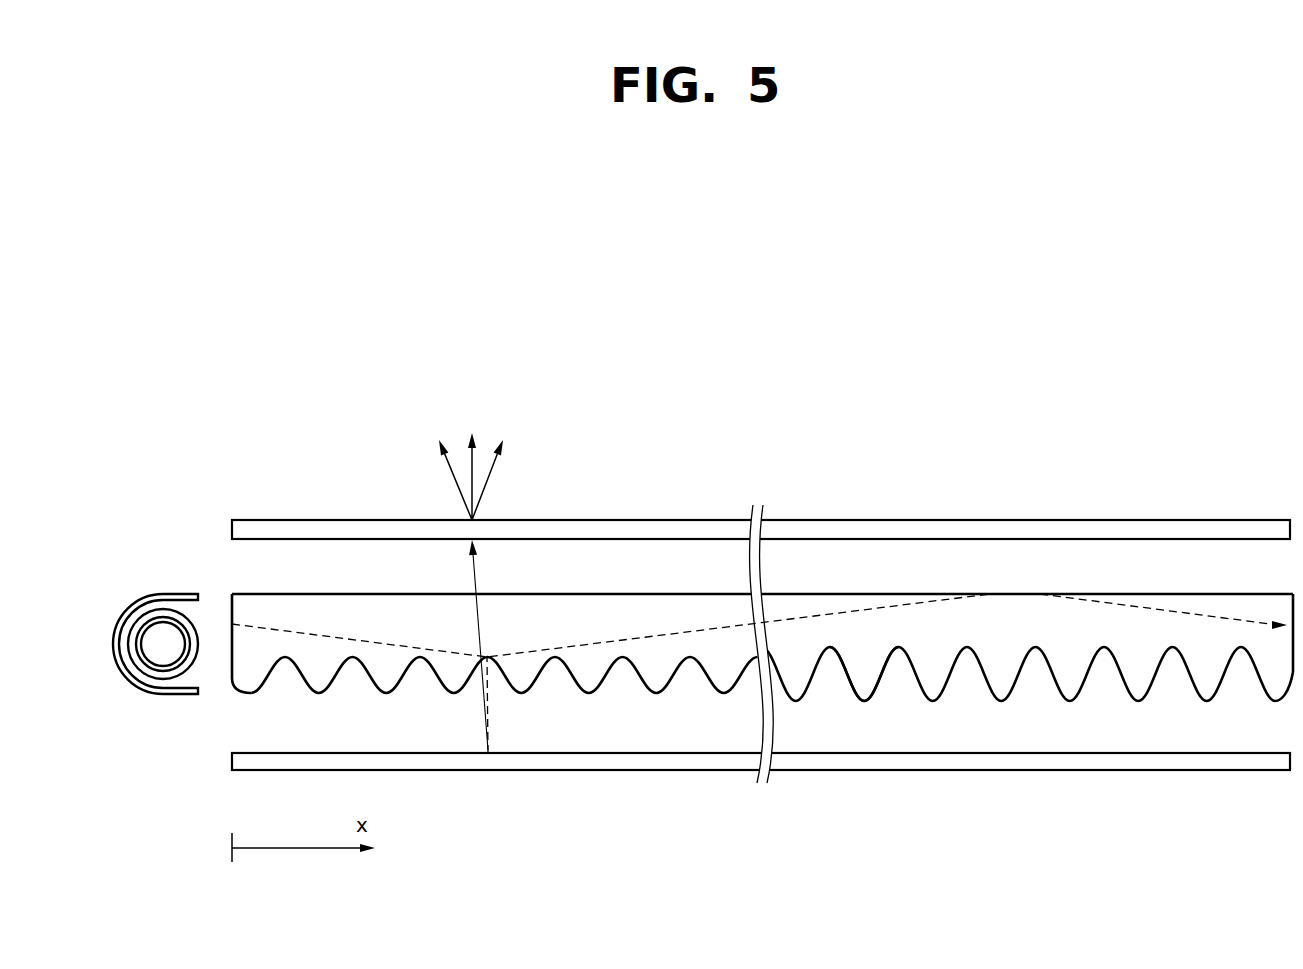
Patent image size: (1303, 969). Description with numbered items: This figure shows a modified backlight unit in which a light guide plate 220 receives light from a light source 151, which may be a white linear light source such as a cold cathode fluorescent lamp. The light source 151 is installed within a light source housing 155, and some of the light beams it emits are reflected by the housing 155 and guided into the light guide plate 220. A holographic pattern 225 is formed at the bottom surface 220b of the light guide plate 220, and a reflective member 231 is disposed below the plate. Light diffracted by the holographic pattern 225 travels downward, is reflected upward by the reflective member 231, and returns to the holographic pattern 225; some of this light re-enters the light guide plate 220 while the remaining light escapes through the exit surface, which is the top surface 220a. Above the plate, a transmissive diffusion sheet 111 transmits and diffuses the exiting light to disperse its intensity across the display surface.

The transmissive diffusion sheet 111 is at (1247, 528).
The reflective member 231 is at (1233, 760).
The light guide plate 220 is at (762, 578).
The top surface 220a is at (898, 594).
The bottom surface 220b is at (662, 682).
The holographic pattern 225 is at (863, 724).
The light source housing 155 is at (125, 608).
The light source 151 is at (163, 610).